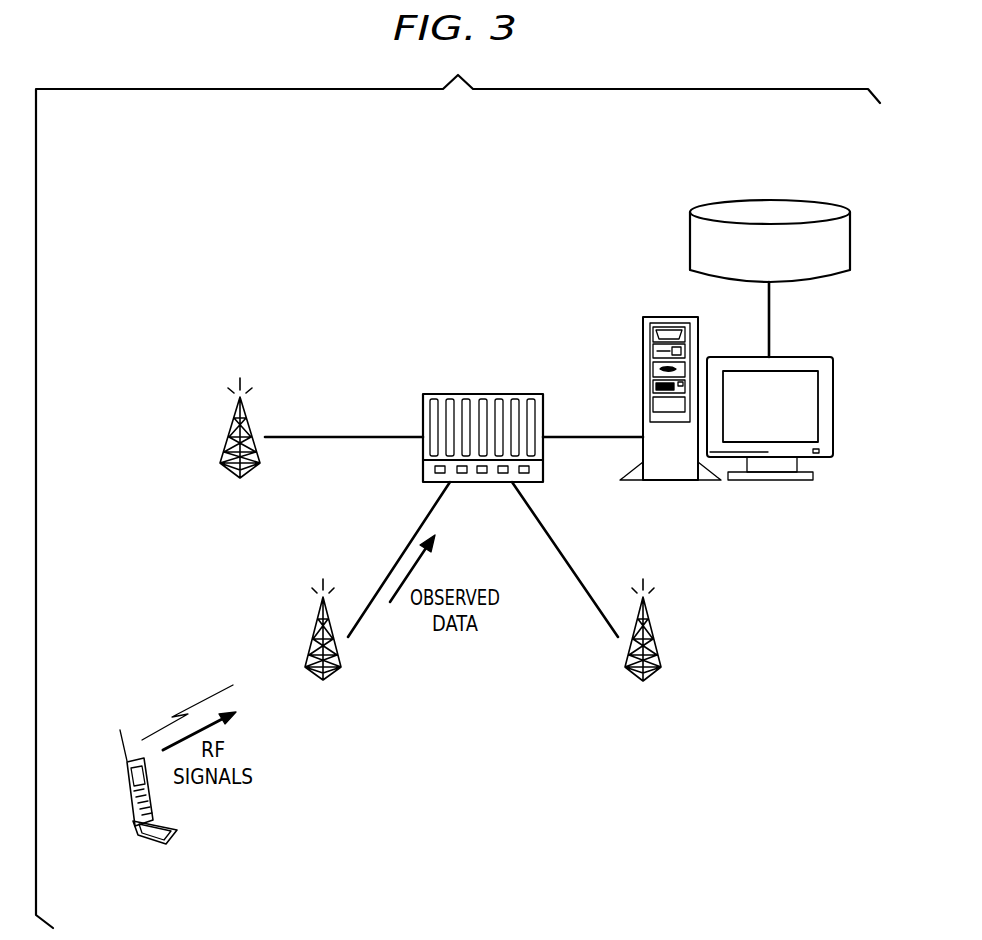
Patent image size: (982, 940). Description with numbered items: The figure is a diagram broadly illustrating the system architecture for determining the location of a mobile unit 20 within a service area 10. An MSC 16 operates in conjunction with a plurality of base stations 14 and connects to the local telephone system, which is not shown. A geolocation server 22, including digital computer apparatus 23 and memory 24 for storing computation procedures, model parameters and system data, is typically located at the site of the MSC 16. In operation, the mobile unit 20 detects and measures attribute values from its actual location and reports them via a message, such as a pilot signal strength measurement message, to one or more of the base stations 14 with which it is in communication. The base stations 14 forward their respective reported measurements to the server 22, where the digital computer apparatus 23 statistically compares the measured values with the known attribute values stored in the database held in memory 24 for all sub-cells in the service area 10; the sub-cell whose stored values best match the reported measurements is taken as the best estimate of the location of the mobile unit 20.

The service area 10 is at (488, 715).
The base station 14 is at (690, 626).
The MSC 16 is at (486, 396).
The mobile unit 20 is at (148, 841).
The server 22 is at (739, 416).
The digital computer apparatus 23 is at (643, 345).
The memory 24 is at (763, 198).